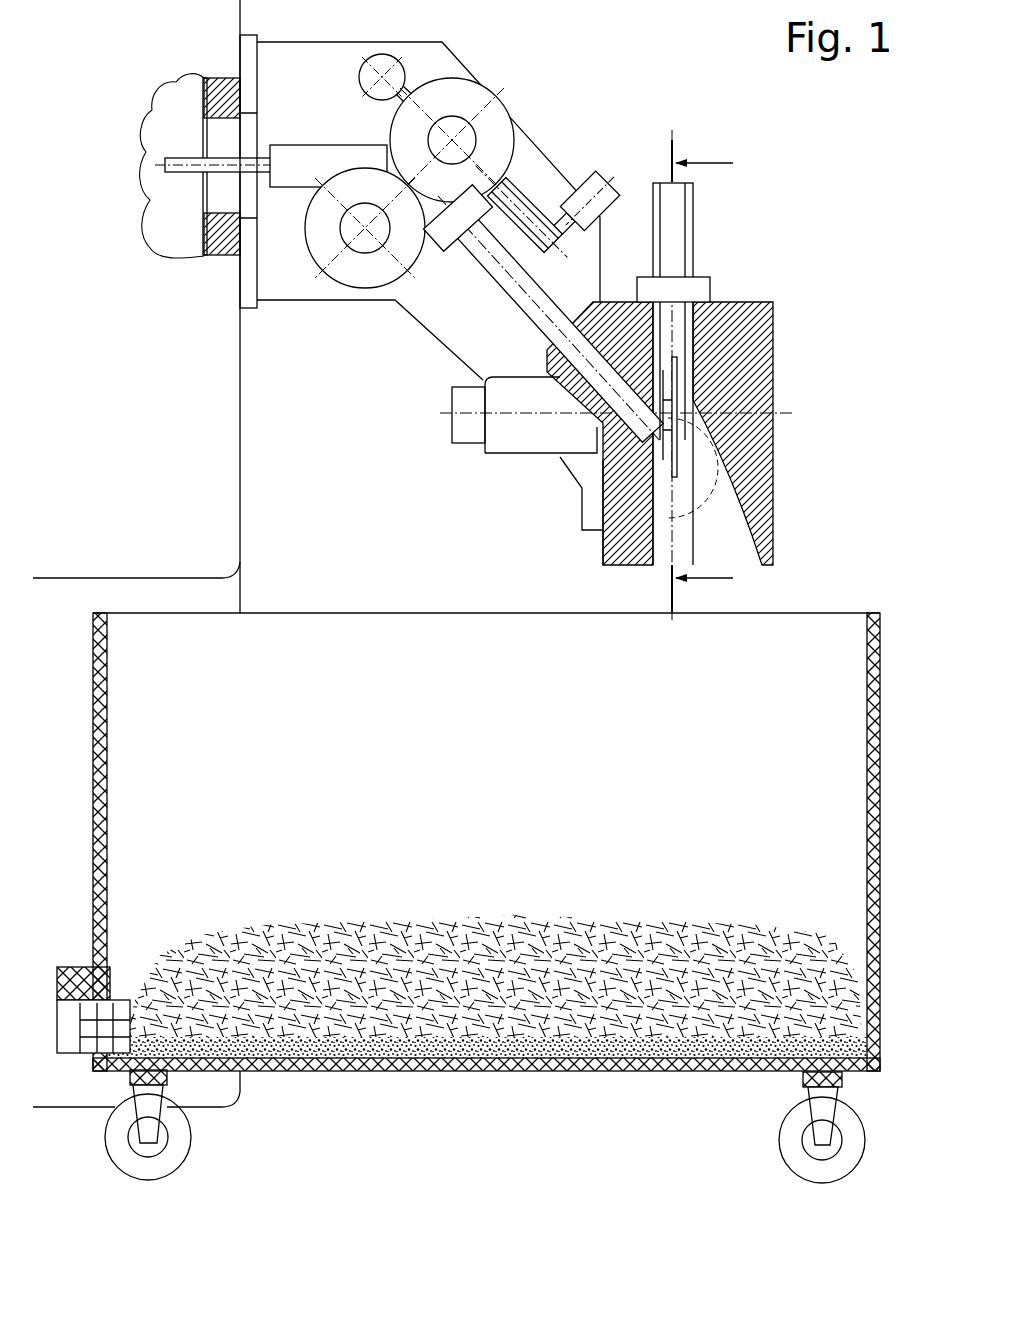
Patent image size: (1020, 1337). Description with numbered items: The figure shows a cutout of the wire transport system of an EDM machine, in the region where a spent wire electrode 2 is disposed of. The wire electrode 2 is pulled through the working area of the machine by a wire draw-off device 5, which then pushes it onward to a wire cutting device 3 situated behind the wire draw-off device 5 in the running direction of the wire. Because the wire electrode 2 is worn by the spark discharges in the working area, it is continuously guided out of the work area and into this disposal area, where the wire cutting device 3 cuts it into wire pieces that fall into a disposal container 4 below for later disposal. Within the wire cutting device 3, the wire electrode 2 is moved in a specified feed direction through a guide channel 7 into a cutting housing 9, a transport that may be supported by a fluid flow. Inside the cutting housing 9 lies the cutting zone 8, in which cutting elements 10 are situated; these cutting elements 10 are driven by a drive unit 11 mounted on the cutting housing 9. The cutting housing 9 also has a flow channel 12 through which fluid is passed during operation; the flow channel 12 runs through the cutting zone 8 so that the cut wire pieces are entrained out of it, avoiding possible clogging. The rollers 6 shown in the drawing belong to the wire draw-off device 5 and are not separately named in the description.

The wire electrode 2 is at (150, 236).
The wire cutting device 3 is at (748, 248).
The disposal container 4 is at (880, 725).
The wire draw-off device 5 is at (474, 48).
The feed rollers 6 is at (514, 136).
The guide channel 7 is at (585, 412).
The cutting zone 8 is at (593, 532).
The cutting housing 9 is at (777, 374).
The cutting elements 10 is at (612, 486).
The drive unit 11 is at (505, 428).
The flow channel 12 is at (690, 345).